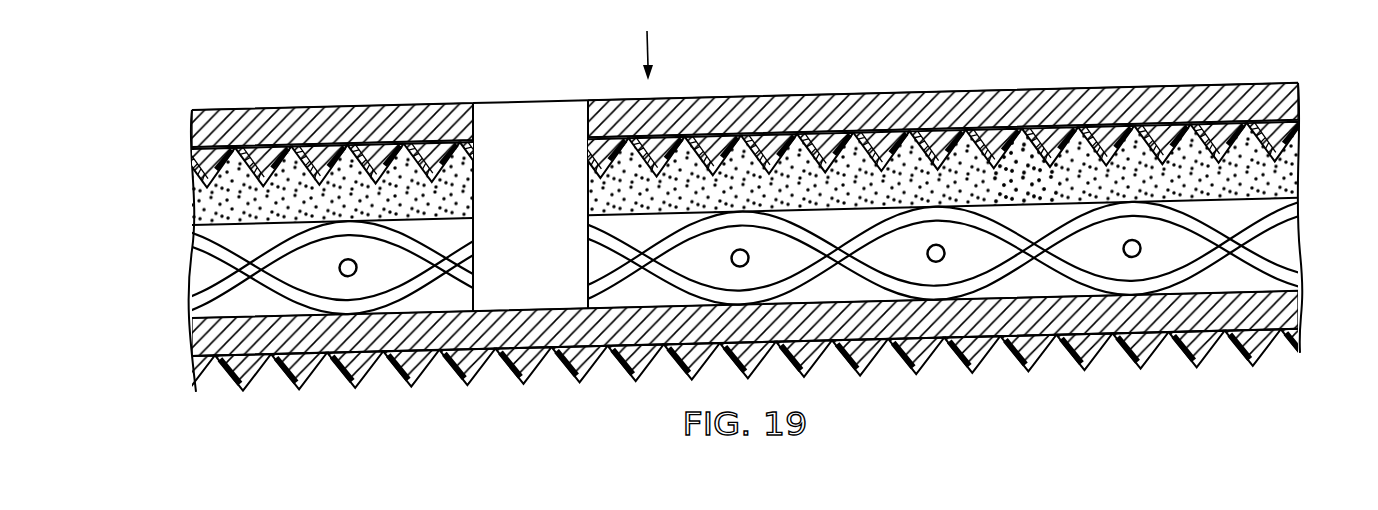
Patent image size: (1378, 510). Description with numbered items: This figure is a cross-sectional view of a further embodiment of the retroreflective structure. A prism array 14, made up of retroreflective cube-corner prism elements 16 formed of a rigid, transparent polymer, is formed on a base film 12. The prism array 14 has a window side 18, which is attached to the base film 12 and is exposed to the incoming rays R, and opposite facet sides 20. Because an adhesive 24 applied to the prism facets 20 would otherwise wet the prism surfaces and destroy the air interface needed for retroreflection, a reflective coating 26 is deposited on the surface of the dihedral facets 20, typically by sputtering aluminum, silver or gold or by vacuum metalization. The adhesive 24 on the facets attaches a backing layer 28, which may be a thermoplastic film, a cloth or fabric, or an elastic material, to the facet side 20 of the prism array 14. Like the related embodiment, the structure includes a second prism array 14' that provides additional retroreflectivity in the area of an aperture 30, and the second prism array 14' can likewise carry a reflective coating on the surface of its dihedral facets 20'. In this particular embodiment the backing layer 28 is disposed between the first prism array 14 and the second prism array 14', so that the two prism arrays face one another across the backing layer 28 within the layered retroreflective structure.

The base film 12 is at (1300, 101).
The prism array 14 is at (741, 119).
The retroreflective cube-corner prism elements 16 is at (713, 168).
The window side 18 is at (1023, 190).
The facet sides 20 is at (745, 294).
The adhesive 24 is at (1302, 174).
The reflective coating 26 is at (588, 181).
The backing layer 28 is at (1300, 232).
The aperture 30 is at (485, 112).
The prism array 14' is at (748, 379).
The dihedral facets 20' is at (630, 386).
The incoming rays R is at (646, 42).